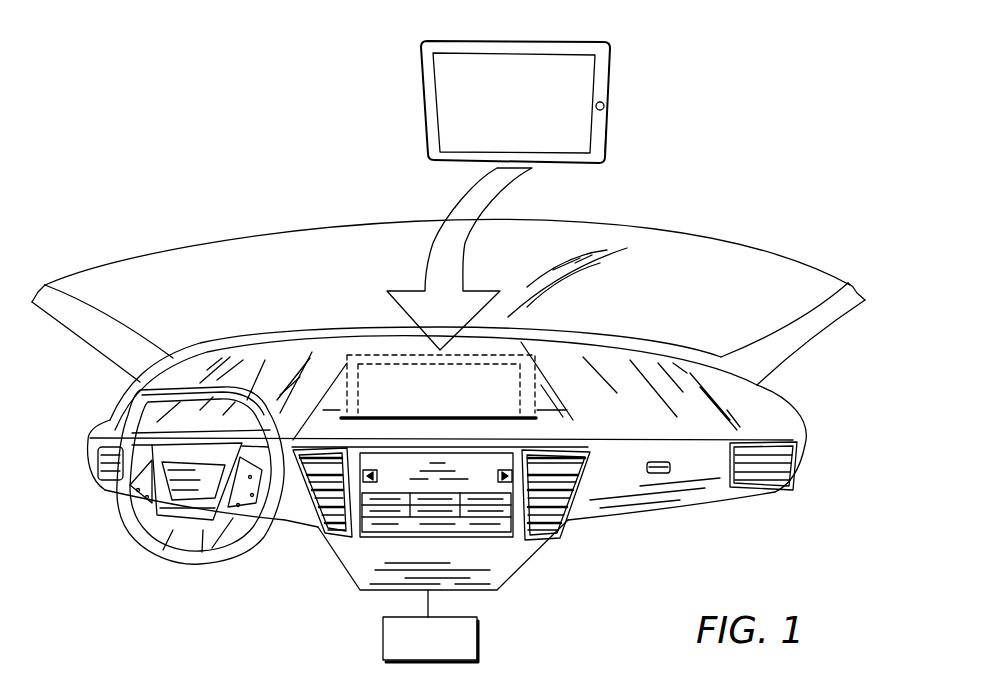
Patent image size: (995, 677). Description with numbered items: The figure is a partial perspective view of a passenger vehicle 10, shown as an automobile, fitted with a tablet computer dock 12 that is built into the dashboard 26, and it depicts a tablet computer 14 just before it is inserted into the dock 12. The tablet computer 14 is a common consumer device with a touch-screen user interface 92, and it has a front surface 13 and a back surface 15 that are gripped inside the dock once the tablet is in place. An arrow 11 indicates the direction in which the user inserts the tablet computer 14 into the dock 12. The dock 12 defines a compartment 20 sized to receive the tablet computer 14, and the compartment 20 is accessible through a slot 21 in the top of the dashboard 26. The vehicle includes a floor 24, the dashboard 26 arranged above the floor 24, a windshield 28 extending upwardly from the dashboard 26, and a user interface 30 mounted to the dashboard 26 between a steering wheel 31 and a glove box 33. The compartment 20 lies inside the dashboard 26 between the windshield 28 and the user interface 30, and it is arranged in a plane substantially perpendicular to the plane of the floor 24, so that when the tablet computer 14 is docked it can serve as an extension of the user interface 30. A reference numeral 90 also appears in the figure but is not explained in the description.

The passenger vehicle 10 is at (778, 240).
The arrow 11 is at (447, 204).
The tablet computer dock 12 is at (550, 421).
The front surface 13 is at (605, 82).
The tablet computer 14 is at (617, 43).
The back surface 15 is at (608, 133).
The compartment 20 is at (395, 405).
The slot 21 is at (529, 410).
The floor 24 is at (383, 637).
The dashboard 26 is at (806, 420).
The windshield 28 is at (755, 312).
The user interface 30 is at (500, 555).
The steering wheel 31 is at (262, 397).
The glove box 33 is at (690, 465).
The docking system 90 is at (157, 122).
The touch-screen user interface 92 is at (538, 66).